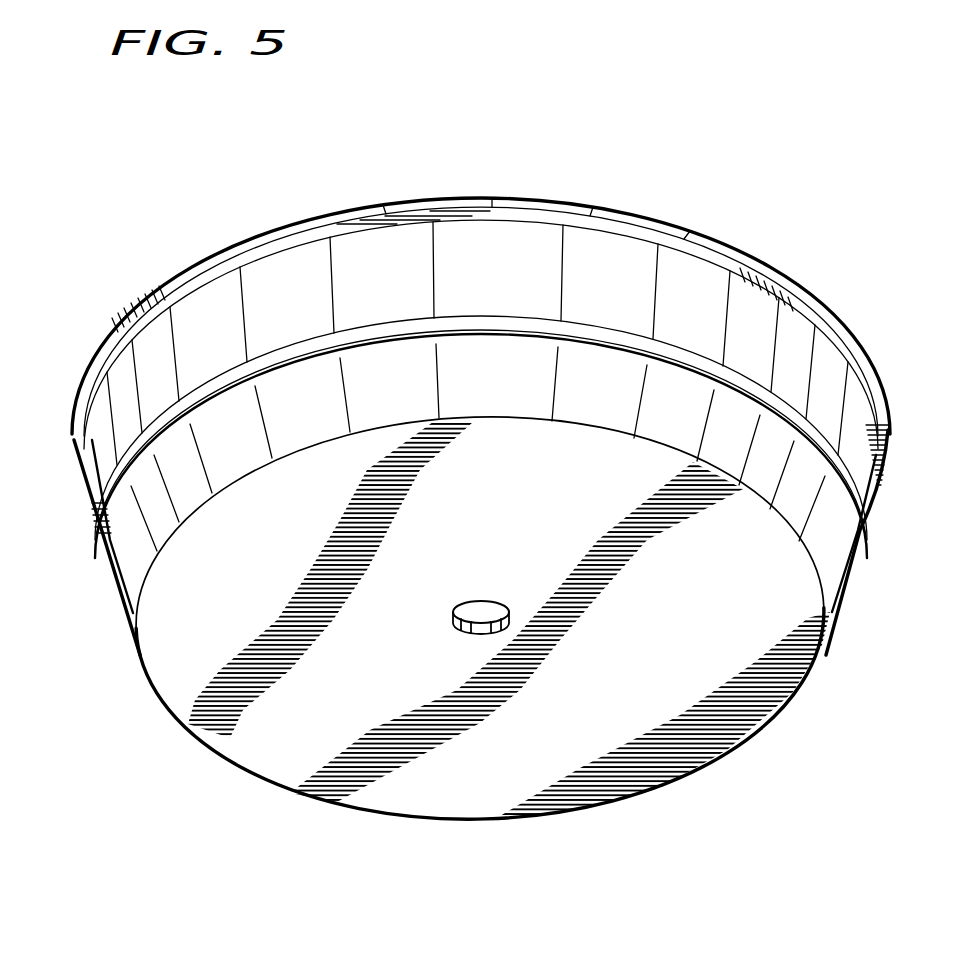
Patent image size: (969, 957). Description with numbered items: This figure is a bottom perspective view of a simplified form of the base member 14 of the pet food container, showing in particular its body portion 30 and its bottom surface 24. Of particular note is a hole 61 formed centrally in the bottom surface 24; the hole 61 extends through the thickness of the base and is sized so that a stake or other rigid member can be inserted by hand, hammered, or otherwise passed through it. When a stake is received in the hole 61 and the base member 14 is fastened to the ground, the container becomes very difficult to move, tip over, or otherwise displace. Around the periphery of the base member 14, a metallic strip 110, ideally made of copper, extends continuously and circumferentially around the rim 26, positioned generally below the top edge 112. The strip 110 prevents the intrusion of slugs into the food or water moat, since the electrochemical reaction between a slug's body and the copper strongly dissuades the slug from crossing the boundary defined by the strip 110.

The base member 14 is at (720, 770).
The bottom surface 24 is at (497, 525).
The rim 26 is at (797, 332).
The body portion 30 is at (233, 307).
The hole 61 is at (455, 621).
The metallic strip 110 is at (113, 497).
The top edge 112 is at (718, 242).